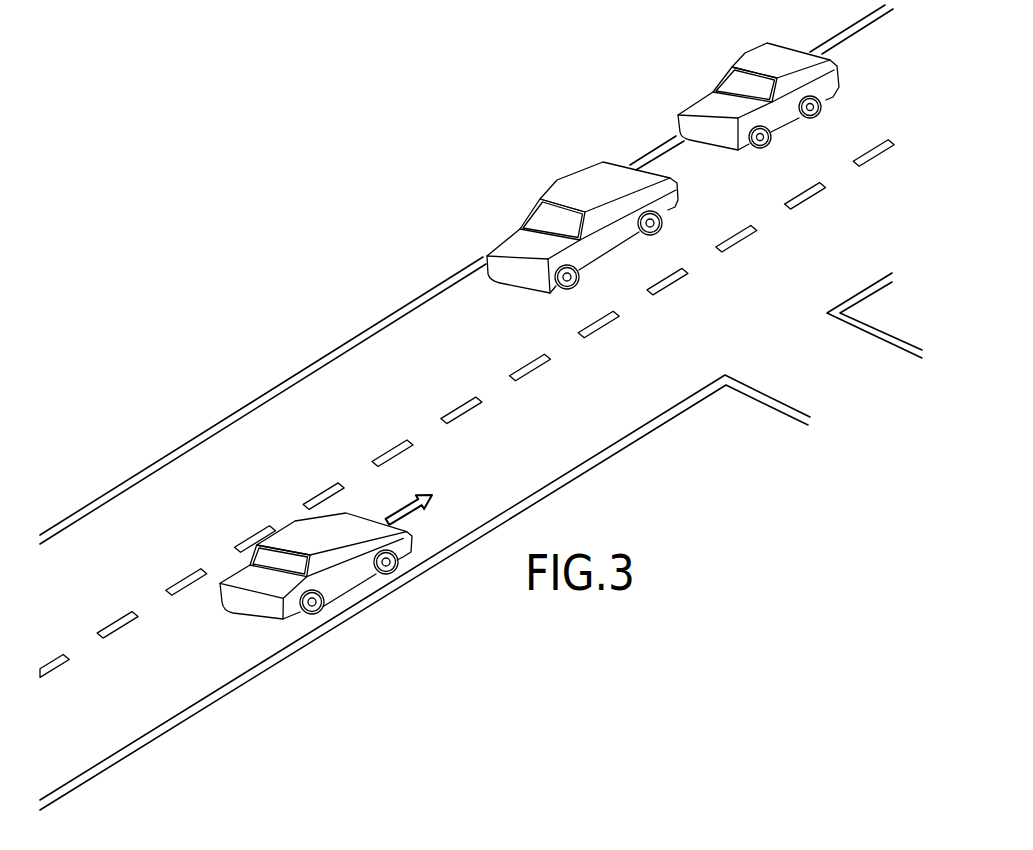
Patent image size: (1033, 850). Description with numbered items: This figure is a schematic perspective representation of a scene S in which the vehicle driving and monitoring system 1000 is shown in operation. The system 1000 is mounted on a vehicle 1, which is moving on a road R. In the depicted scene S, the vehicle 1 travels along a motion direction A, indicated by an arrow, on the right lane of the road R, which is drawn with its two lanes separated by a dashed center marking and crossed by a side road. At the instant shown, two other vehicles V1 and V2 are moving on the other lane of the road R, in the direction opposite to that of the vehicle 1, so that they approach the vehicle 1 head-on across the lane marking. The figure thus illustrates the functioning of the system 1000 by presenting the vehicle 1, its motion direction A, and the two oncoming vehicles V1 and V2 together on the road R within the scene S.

The vehicle 1 is at (233, 515).
The vehicle driving and monitoring system 1000 is at (272, 524).
The motion direction A is at (398, 518).
The scene S is at (362, 218).
The road R is at (662, 387).
The vehicle V1 is at (555, 180).
The vehicle V2 is at (712, 73).